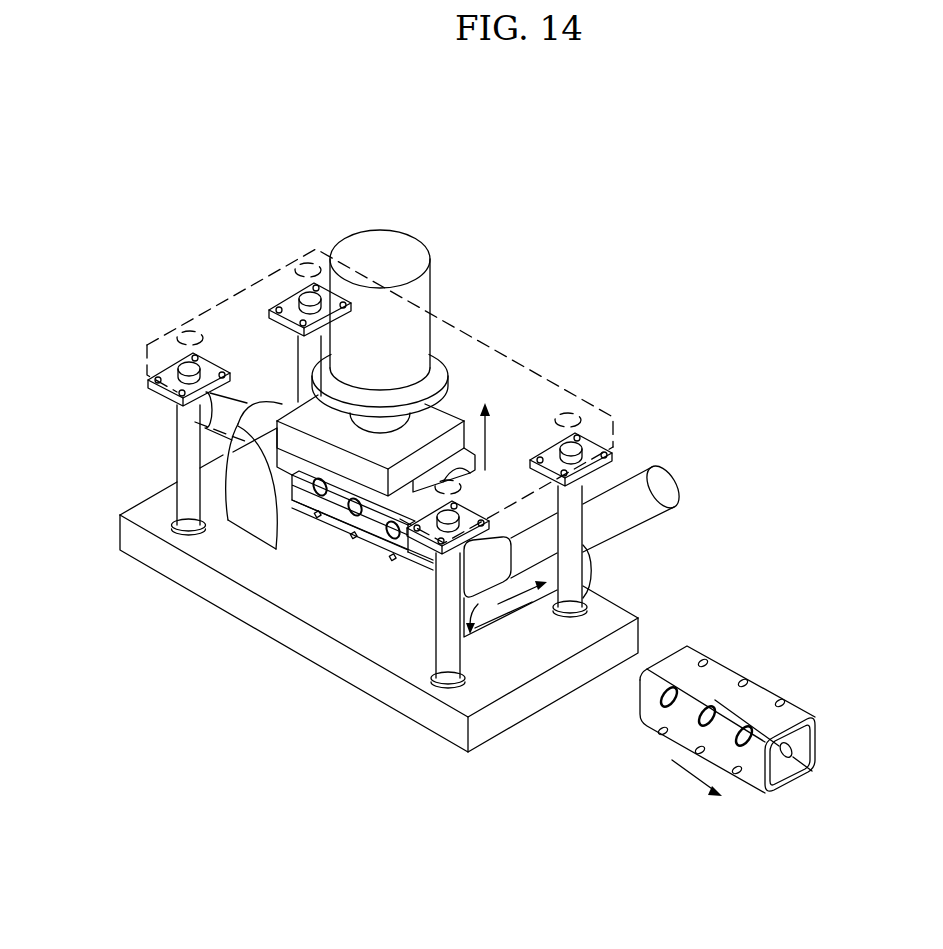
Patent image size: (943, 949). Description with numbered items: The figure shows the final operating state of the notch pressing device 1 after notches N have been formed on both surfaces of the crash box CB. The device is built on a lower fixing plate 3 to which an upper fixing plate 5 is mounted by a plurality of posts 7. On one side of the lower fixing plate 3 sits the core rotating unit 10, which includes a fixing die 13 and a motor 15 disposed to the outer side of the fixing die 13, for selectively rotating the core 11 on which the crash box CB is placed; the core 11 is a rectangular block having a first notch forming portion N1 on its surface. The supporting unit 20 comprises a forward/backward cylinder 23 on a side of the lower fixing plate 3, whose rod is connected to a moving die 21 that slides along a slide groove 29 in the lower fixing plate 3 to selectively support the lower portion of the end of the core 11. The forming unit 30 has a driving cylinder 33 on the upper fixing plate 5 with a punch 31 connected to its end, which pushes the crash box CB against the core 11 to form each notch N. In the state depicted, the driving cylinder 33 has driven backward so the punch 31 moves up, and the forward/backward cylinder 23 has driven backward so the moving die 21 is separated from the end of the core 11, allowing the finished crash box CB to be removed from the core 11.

The notch pressing device 1 is at (578, 290).
The lower fixing plate 3 is at (120, 545).
The upper fixing plate 5 is at (568, 395).
The posts 7 is at (190, 465).
The core rotating unit 10 is at (264, 592).
The core 11 is at (423, 565).
The fixing die 13 is at (250, 512).
The motor 15 is at (208, 430).
The supporting unit 20 is at (608, 570).
The moving die 21 is at (525, 600).
The forward/backward cylinder 23 is at (662, 475).
The slide groove 29 is at (478, 606).
The forming unit 30 is at (435, 315).
The punch 31 is at (350, 478).
The driving cylinder 33 is at (400, 235).
The notch N is at (698, 752).
The first notch forming portion N1 is at (380, 543).
The crash box CB is at (697, 775).